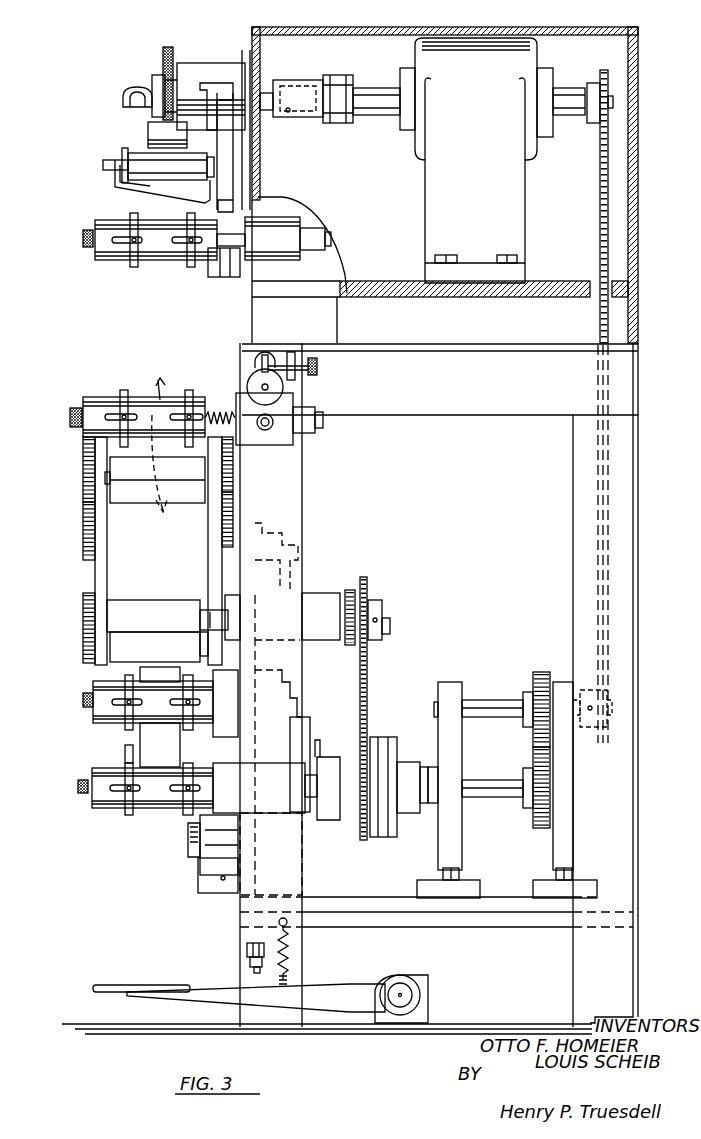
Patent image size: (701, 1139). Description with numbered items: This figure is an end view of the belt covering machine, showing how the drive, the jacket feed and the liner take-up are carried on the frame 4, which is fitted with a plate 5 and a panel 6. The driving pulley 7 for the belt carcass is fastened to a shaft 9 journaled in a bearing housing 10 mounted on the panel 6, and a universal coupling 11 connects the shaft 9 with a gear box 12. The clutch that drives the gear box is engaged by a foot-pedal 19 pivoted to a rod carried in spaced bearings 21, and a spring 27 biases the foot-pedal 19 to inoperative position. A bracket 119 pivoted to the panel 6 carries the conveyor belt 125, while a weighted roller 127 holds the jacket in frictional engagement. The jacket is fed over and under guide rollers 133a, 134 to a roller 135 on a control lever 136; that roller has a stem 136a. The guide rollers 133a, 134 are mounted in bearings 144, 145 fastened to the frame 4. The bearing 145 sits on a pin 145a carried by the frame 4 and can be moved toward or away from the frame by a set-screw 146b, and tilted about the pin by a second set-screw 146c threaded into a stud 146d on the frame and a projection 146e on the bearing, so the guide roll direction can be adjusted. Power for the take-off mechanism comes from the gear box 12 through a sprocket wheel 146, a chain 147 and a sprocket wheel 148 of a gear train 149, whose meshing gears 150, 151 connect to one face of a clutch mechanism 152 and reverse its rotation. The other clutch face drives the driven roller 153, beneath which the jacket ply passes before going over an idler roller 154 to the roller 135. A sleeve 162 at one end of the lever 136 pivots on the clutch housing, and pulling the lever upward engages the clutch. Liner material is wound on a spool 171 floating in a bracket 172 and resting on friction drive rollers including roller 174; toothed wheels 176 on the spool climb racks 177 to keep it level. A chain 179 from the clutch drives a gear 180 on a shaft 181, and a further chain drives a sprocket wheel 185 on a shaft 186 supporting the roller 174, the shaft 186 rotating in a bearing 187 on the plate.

The frame 4 is at (302, 480).
The plate 5 is at (431, 357).
The panel 6 is at (258, 196).
The driving pulley 7 is at (163, 58).
The shaft 9 is at (292, 122).
The bearing housing 10 is at (215, 75).
The universal coupling 11 is at (340, 125).
The gear box 12 is at (428, 192).
The foot-pedal 19 is at (222, 988).
The bearings 21 is at (415, 980).
The spring 27 is at (283, 952).
The bracket 119 is at (135, 190).
The conveyor belt 125 is at (135, 157).
The roller 127 is at (150, 127).
The guide roller 133a is at (118, 262).
The guide roller 134 is at (100, 395).
The roller 135 is at (150, 808).
The control lever 136 is at (277, 812).
The stem 136a is at (250, 292).
The bearing 144 is at (283, 230).
The bearing 145 is at (300, 400).
The pin 145a is at (268, 422).
The sprocket wheel 146 is at (610, 74).
The set-screw 146b is at (310, 426).
The set-screw 146c is at (319, 366).
The stud 146d is at (295, 355).
The projection 146e is at (268, 360).
The chain 147 is at (610, 226).
The sprocket wheel 148 is at (607, 695).
The gear train 149 is at (501, 688).
The gear 150 is at (542, 672).
The gear 151 is at (537, 760).
The clutch mechanism 152 is at (388, 740).
The driven roller 153 is at (105, 808).
The idler roller 154 is at (105, 722).
The sleeve 162 is at (312, 755).
The spool 171 is at (150, 500).
The bracket 172 is at (97, 575).
The friction drive roller 174 is at (110, 620).
The toothed wheels 176 is at (83, 470).
The racks 177 is at (88, 522).
The chain 179 is at (367, 668).
The gear 180 is at (378, 600).
The shaft 181 is at (392, 620).
The sprocket wheel 185 is at (352, 578).
The shaft 186 is at (210, 612).
The bearing 187 is at (318, 600).